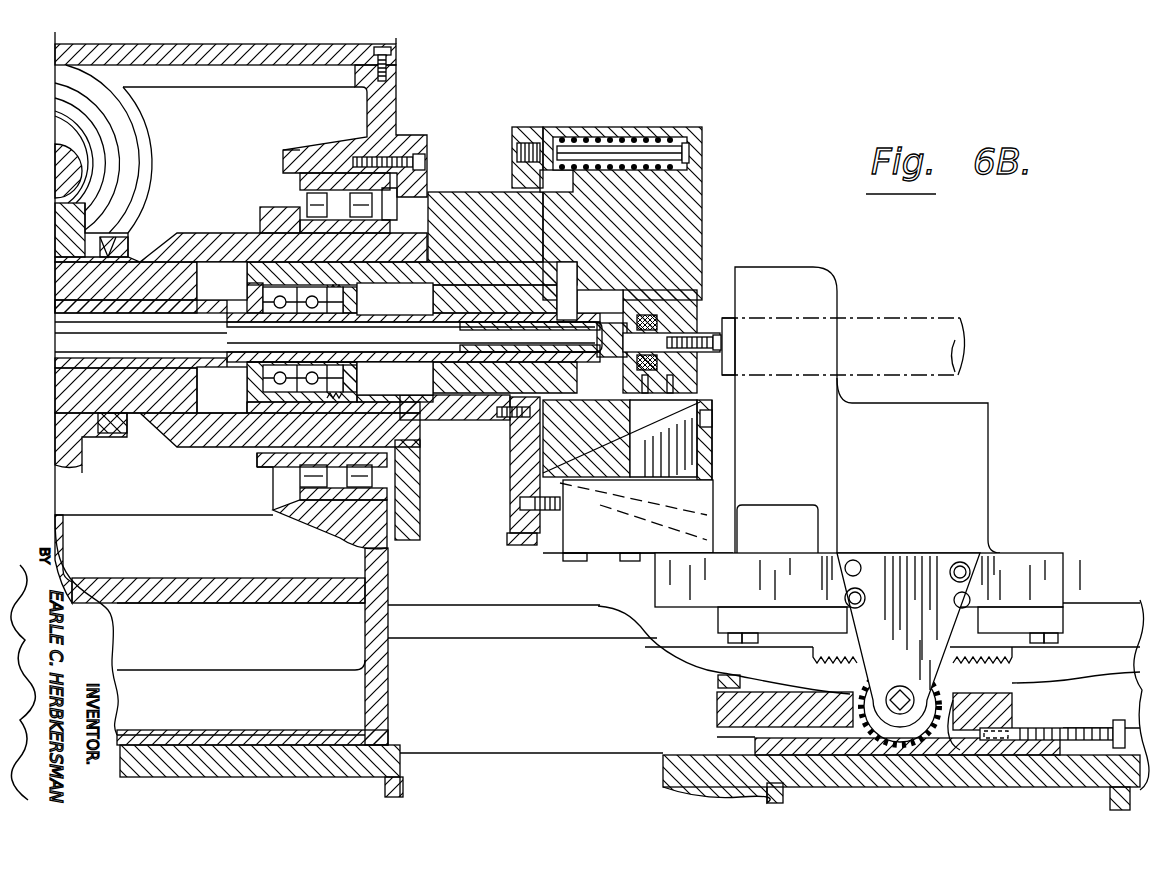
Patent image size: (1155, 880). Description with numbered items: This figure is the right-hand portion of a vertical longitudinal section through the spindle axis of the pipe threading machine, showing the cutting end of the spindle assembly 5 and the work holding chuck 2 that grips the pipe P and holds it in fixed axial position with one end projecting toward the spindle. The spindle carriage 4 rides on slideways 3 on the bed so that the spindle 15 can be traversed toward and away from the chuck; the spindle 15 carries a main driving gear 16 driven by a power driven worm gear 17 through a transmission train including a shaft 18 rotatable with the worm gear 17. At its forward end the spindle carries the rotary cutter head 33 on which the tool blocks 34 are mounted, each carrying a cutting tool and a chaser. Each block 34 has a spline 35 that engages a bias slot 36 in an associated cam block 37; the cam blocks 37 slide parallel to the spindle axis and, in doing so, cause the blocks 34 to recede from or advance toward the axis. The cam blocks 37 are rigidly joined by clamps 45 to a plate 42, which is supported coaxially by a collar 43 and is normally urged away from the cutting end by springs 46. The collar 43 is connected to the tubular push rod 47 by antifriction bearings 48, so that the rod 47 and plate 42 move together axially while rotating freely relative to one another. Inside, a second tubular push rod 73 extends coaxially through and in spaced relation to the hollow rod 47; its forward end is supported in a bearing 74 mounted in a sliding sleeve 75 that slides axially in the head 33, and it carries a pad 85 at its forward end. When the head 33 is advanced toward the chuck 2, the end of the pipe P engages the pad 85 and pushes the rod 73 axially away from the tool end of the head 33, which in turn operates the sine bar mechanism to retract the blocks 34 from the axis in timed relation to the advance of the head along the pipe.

The work holding chuck 2 is at (826, 284).
The slideways 3 is at (480, 640).
The spindle carriage 4 is at (394, 103).
The spindle assembly 5 is at (220, 462).
The spindle 15 is at (168, 448).
The main driving gear 16 is at (82, 473).
The worm gear 17 is at (55, 121).
The shaft 18 is at (55, 165).
The rotary cutter head 33 is at (713, 189).
The tool block 34 is at (717, 410).
The spline 35 is at (637, 470).
The bias slot 36 is at (648, 507).
The cam block 37 is at (616, 552).
The plate 42 is at (516, 127).
The collar 43 is at (378, 392).
The clamps 45 is at (548, 548).
The springs 46 is at (647, 147).
The tubular push rod 47 is at (211, 304).
The antifriction bearings 48 is at (262, 378).
The tubular push rod 73 is at (383, 317).
The bearing 74 is at (645, 309).
The sliding sleeve 75 is at (683, 298).
The pad 85 is at (702, 320).
The pipe P is at (908, 320).